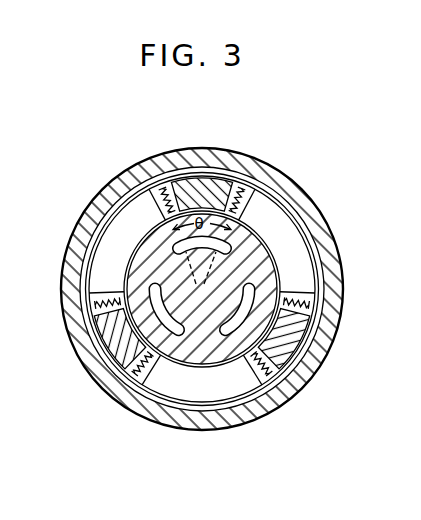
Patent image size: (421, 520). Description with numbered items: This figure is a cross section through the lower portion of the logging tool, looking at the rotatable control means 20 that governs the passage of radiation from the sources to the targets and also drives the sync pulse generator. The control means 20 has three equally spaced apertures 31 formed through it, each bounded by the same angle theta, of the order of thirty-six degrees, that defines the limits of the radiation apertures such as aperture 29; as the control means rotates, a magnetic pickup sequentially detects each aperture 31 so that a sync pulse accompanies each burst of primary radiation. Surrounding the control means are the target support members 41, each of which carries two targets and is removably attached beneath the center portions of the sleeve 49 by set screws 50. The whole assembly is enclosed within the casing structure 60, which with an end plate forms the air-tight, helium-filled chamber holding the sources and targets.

The control means 20 is at (204, 356).
The aperture 29 is at (126, 182).
The apertures 31 is at (200, 254).
The support member 41 is at (197, 180).
The sleeve 49 is at (291, 216).
The set screws 50 is at (160, 180).
The casing structure 60 is at (62, 265).